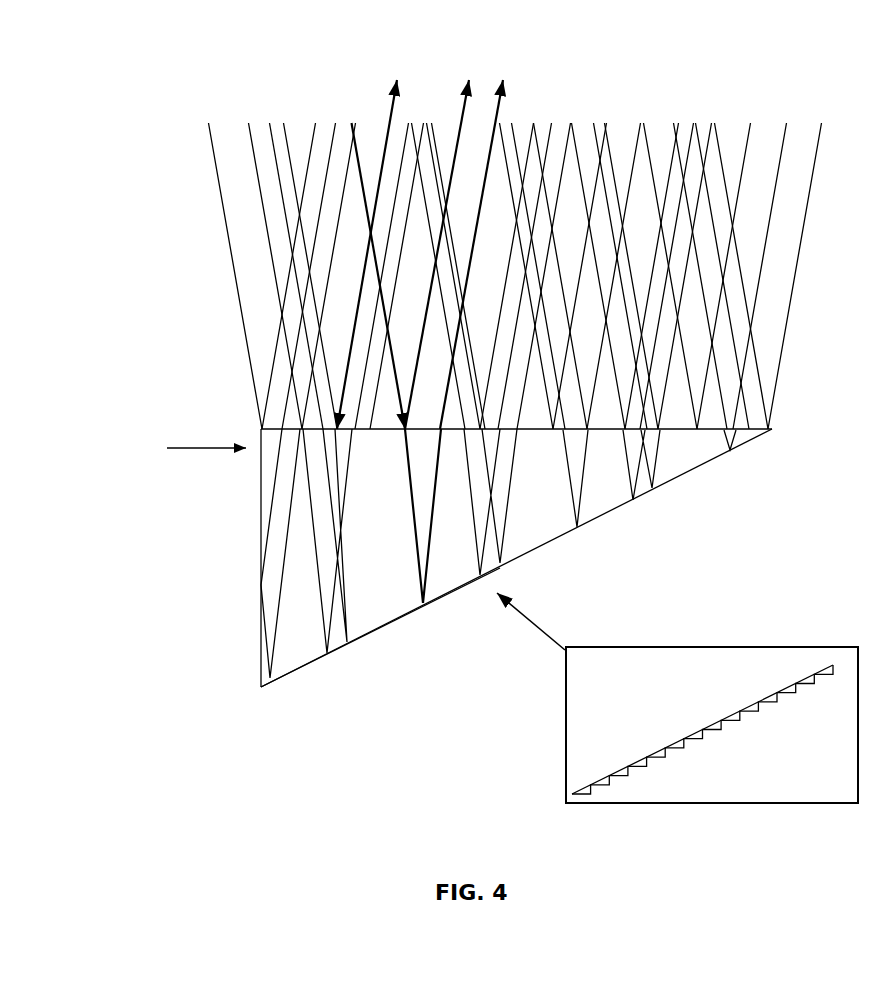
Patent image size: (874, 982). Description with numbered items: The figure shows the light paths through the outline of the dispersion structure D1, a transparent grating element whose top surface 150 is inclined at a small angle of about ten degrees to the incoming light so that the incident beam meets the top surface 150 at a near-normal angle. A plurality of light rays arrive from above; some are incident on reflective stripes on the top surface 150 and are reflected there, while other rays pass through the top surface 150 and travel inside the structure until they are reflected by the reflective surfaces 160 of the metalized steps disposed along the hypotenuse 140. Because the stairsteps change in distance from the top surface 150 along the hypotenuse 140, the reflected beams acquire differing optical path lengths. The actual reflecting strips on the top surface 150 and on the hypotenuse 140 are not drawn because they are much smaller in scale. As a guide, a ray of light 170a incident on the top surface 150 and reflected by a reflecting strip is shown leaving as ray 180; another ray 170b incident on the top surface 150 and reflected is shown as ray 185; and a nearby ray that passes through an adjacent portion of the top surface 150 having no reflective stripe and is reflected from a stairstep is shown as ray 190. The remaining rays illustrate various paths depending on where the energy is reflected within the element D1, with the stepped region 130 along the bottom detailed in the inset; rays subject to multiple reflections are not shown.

The ray of light 170a is at (272, 128).
The ray 170b is at (352, 130).
The reflected ray 180 is at (390, 113).
The reflected ray 185 is at (466, 118).
The stairstep-reflected ray 190 is at (506, 108).
The top surface 150 is at (752, 426).
The light guide wedge 130 is at (543, 545).
The hypotenuse 140 is at (385, 625).
The reflective surfaces 160 is at (712, 728).
The dispersion structure D1 is at (189, 451).